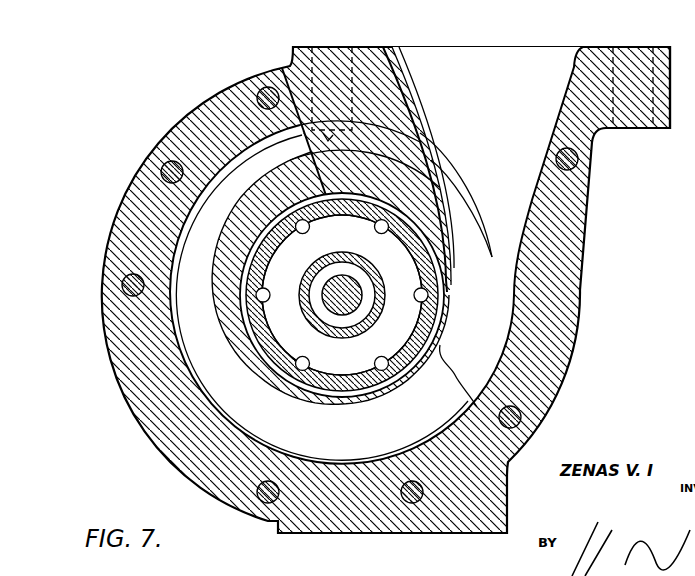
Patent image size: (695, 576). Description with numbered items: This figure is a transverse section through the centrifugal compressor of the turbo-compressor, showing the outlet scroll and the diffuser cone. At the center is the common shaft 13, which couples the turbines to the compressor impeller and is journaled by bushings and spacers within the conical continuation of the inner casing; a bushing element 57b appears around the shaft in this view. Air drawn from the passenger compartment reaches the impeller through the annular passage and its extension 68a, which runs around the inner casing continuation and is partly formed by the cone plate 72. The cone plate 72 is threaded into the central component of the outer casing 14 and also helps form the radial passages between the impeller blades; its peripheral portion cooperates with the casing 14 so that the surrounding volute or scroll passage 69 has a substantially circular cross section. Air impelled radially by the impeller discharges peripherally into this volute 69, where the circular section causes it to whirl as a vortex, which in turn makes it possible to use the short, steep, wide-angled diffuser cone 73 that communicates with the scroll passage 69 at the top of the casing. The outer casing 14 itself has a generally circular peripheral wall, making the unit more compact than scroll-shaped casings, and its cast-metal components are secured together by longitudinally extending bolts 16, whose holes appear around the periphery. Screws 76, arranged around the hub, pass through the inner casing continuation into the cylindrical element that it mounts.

The outer casing 14 is at (114, 247).
The bolts 16 is at (165, 168).
The diffuser cone 73 is at (578, 52).
The volute or scroll passage 69 is at (232, 408).
The cone plate 72 is at (315, 384).
The extension of annular passage 68a is at (342, 296).
The screws 76 is at (423, 290).
The shaft bushing 57b is at (376, 317).
The common shaft 13 is at (352, 285).